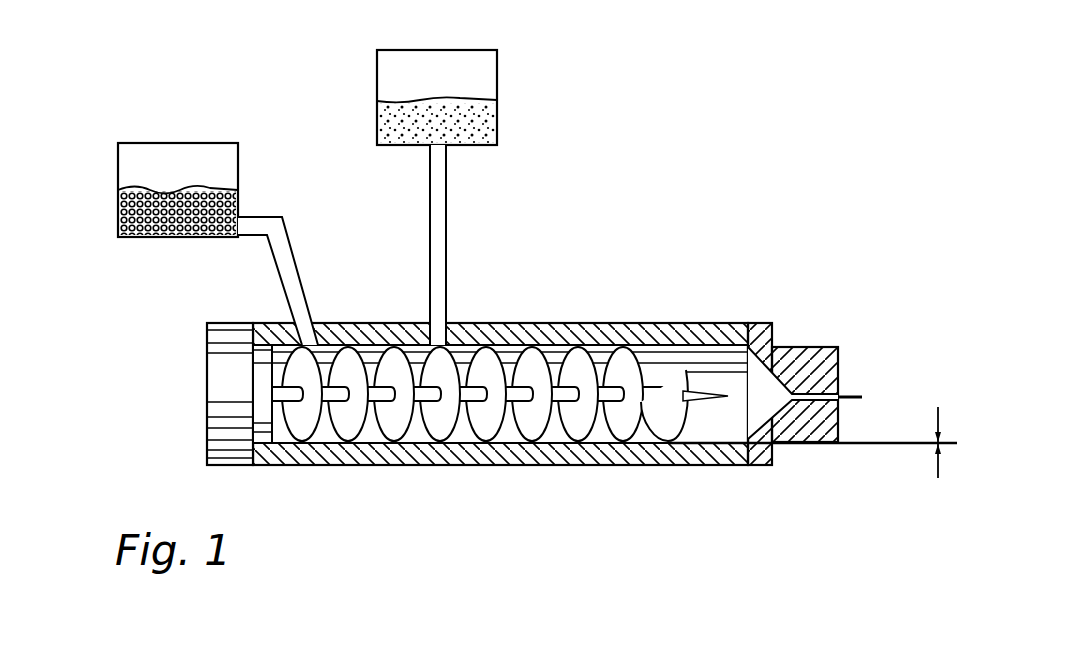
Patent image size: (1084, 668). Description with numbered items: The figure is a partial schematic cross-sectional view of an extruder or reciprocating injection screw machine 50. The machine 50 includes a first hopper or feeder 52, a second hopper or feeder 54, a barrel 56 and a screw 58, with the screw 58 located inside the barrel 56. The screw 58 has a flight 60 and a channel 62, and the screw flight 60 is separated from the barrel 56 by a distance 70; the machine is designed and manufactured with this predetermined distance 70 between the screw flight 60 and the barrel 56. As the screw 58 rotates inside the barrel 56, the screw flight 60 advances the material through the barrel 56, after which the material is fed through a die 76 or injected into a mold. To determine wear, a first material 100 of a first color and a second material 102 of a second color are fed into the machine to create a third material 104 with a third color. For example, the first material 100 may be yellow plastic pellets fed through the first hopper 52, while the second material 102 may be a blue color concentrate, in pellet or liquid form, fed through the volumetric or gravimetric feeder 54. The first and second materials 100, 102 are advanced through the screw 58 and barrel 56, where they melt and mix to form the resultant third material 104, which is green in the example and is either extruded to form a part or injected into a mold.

The reciprocating injection screw machine 50 is at (282, 92).
The first hopper 52 is at (118, 160).
The second hopper 54 is at (497, 78).
The barrel 56 is at (510, 457).
The screw 58 is at (582, 358).
The flight 60 is at (537, 358).
The channel 62 is at (512, 357).
The distance 70 is at (813, 464).
The die 76 is at (800, 347).
The first material 100 is at (118, 218).
The second material 102 is at (478, 127).
The third material 104 is at (858, 395).